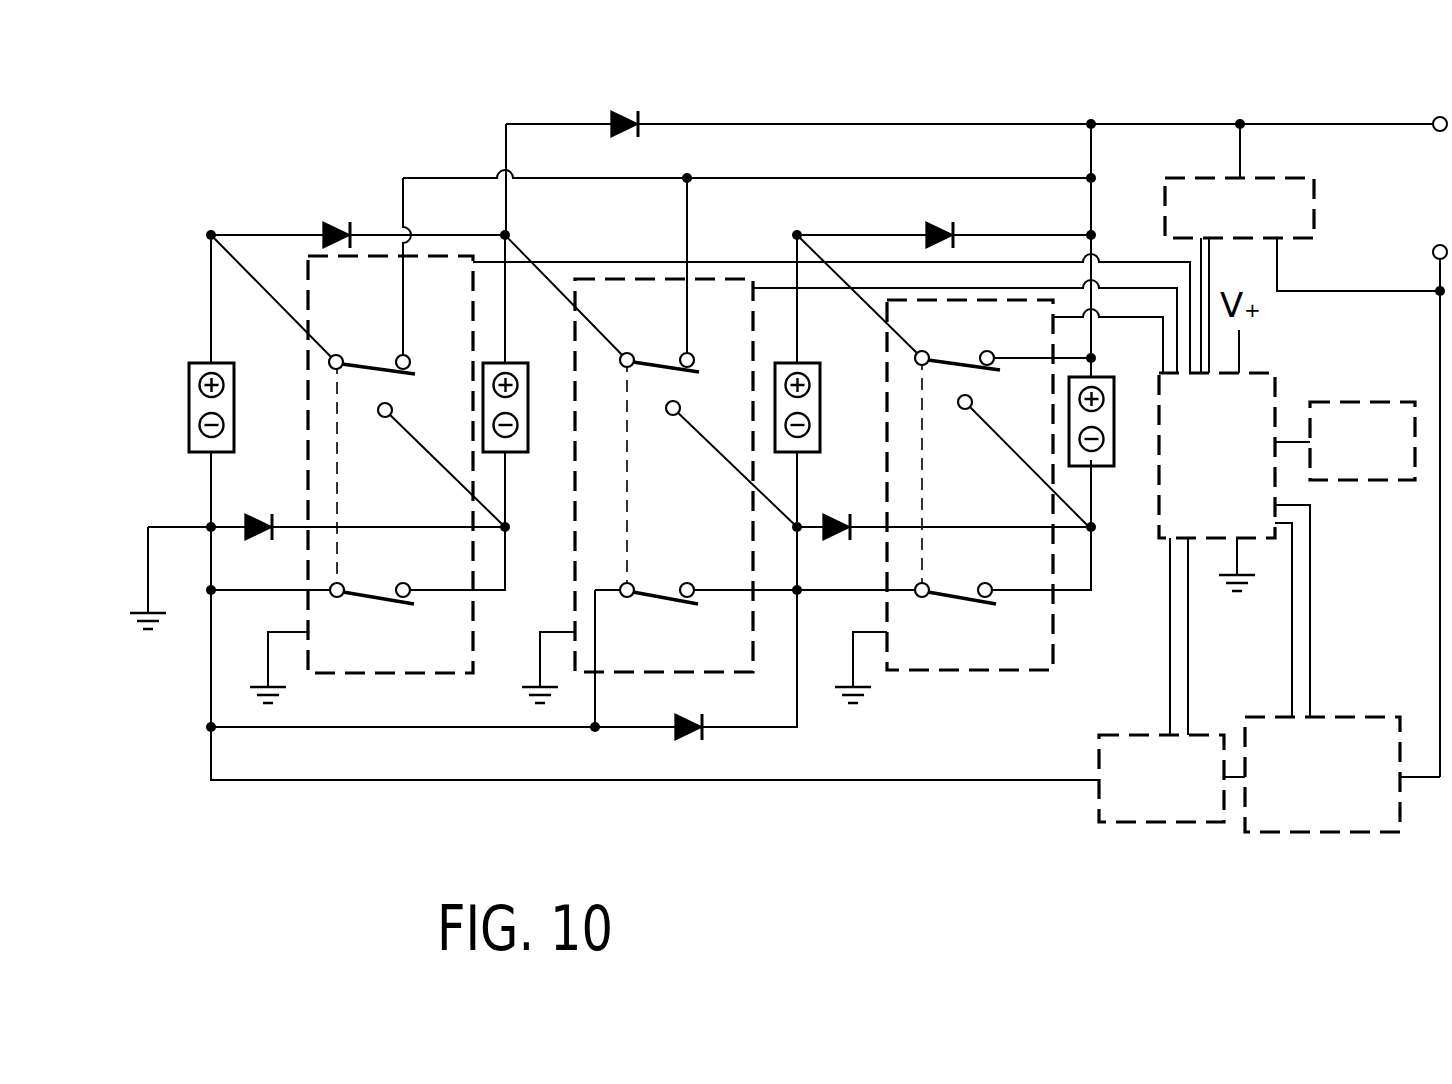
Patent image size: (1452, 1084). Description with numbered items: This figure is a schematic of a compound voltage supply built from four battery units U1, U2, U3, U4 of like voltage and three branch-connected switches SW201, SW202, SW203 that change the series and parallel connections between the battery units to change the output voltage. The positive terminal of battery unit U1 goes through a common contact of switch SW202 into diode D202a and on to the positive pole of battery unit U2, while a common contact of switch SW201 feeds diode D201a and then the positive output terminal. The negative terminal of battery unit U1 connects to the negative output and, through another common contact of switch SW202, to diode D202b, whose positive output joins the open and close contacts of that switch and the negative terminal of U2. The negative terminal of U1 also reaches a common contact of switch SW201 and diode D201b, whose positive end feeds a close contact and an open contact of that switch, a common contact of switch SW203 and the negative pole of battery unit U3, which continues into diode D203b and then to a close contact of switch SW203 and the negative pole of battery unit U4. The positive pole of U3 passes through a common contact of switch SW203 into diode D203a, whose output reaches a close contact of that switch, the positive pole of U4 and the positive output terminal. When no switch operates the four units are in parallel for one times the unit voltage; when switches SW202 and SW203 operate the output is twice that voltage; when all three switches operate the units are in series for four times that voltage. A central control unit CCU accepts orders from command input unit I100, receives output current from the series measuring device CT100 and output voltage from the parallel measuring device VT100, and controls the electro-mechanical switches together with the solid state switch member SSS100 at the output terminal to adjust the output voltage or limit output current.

The diode D201a is at (621, 109).
The diode D202a is at (343, 221).
The diode D203a is at (949, 218).
The diode D201b is at (695, 712).
The diode D202b is at (257, 511).
The diode D203b is at (841, 512).
The switch SW201 is at (755, 660).
The switch SW202 is at (476, 638).
The switch SW203 is at (928, 676).
The battery unit U1 is at (185, 407).
The battery unit U2 is at (518, 428).
The battery unit U3 is at (820, 407).
The battery unit U4 is at (1104, 440).
The measuring device VT100 is at (1239, 208).
The central control unit CCU is at (1217, 455).
The command input unit I100 is at (1362, 441).
The measuring device CT100 is at (1161, 778).
The solid state switch member SSS100 is at (1322, 774).